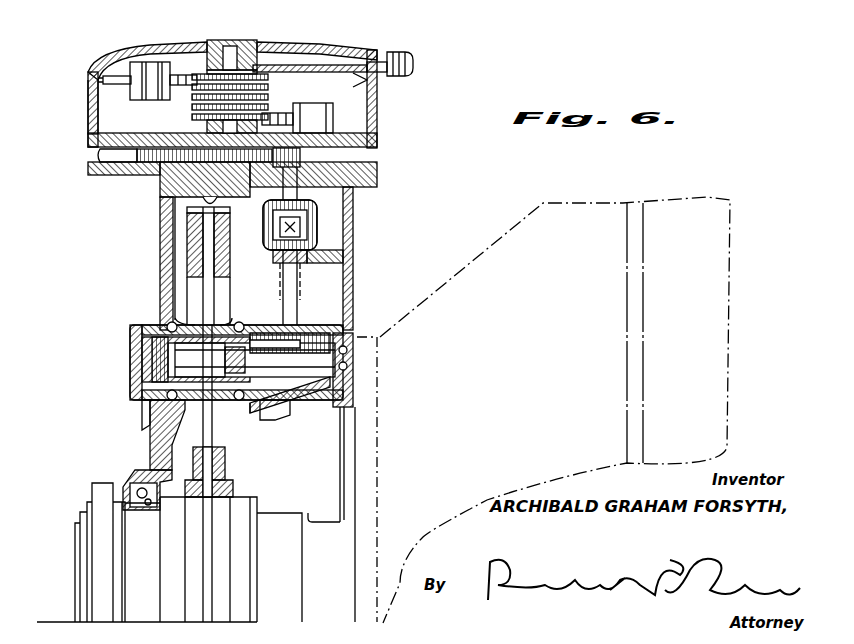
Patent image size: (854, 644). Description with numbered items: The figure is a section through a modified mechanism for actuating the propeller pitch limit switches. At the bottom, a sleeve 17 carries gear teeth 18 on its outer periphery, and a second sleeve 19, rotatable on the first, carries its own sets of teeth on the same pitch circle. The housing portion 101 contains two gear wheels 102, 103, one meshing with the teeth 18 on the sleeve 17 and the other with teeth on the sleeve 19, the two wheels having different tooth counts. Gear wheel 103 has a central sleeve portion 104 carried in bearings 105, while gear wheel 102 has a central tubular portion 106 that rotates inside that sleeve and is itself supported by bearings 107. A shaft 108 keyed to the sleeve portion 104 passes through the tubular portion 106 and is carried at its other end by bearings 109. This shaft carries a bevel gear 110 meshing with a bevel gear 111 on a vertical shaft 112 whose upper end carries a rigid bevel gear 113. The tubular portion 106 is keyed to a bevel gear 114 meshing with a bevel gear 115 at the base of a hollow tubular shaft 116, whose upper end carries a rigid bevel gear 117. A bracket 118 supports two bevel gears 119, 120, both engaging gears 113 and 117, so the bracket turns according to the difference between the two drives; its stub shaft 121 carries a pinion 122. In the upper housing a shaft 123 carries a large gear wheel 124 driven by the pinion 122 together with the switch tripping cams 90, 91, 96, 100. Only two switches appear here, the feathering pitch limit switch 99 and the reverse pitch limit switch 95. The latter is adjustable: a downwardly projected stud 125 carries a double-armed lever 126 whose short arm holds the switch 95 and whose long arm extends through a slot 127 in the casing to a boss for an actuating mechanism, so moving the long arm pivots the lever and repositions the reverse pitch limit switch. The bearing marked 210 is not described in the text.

The sleeve 17 is at (243, 540).
The gear teeth 18 is at (250, 507).
The second sleeve 19 is at (175, 553).
The switch tripping member 90 is at (200, 98).
The switch tripping member 91 is at (200, 88).
The reverse pitch limit switch 95 is at (88, 73).
The switch tripping member 96 is at (268, 84).
The feathering pitch limit switch 99 is at (297, 118).
The switch tripping member 100 is at (205, 118).
The housing portion 101 is at (187, 218).
The gear wheel 102 is at (217, 464).
The gear wheel 103 is at (165, 463).
The central sleeve portion 104 is at (193, 325).
The bearings 105 is at (170, 325).
The central tubular portion 106 is at (157, 413).
The bearings 107 is at (230, 432).
The shaft 108 is at (157, 382).
The bearings 109 is at (358, 380).
The bevel gear 110 is at (312, 392).
The bevel gear 111 is at (313, 367).
The vertical shaft 112 is at (340, 258).
The bevel gear 113 is at (317, 210).
The bevel gear 114 is at (280, 413).
The bevel gear 115 is at (343, 323).
The hollow tubular shaft 116 is at (300, 294).
The bevel gear 117 is at (305, 248).
The bracket 118 is at (353, 193).
The bevel gear 119 is at (250, 240).
The bevel gear 120 is at (300, 235).
The stub shaft 121 is at (377, 174).
The pinion 122 is at (298, 154).
The shaft 123 is at (158, 178).
The large gear wheel 124 is at (377, 143).
The stud 125 is at (220, 43).
The double-armed lever 126 is at (264, 62).
The slot 127 is at (381, 54).
The ball bearing 210 is at (157, 503).